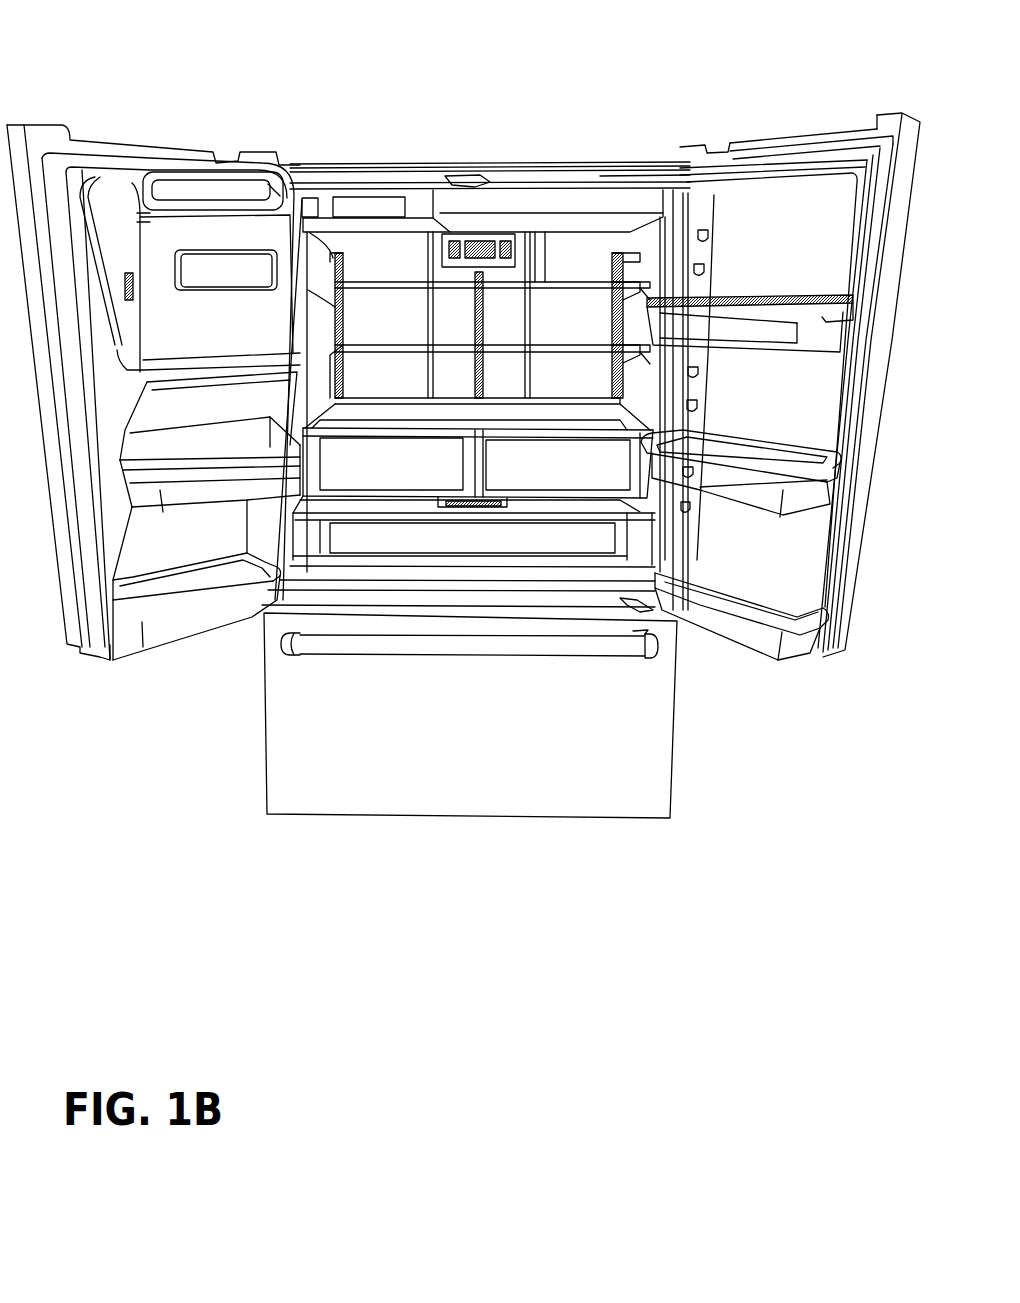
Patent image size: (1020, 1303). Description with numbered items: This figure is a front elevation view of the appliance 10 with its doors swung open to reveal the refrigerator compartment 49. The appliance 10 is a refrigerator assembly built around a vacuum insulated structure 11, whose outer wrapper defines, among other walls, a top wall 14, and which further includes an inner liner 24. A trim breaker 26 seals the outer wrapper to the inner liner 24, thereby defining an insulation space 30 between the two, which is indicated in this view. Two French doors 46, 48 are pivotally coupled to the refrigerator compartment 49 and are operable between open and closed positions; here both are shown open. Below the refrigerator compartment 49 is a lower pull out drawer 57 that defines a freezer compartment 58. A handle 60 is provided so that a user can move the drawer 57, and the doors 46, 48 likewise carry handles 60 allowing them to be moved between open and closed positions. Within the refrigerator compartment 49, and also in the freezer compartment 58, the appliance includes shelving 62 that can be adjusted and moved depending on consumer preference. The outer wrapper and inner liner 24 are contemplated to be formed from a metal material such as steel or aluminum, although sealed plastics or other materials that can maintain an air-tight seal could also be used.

The appliance 10 is at (490, 125).
The vacuum insulated structure 11 is at (307, 143).
The top wall 14 is at (330, 157).
The inner liner 24 is at (420, 197).
The trim breaker 26 is at (377, 172).
The insulation space 30 is at (617, 167).
The French door 46 is at (133, 133).
The French door 48 is at (823, 133).
The refrigerator compartment 49 is at (587, 247).
The lower pull out drawer 57 is at (423, 772).
The freezer compartment 58 is at (590, 745).
The handle 60 is at (337, 647).
The shelving 62 is at (500, 345).